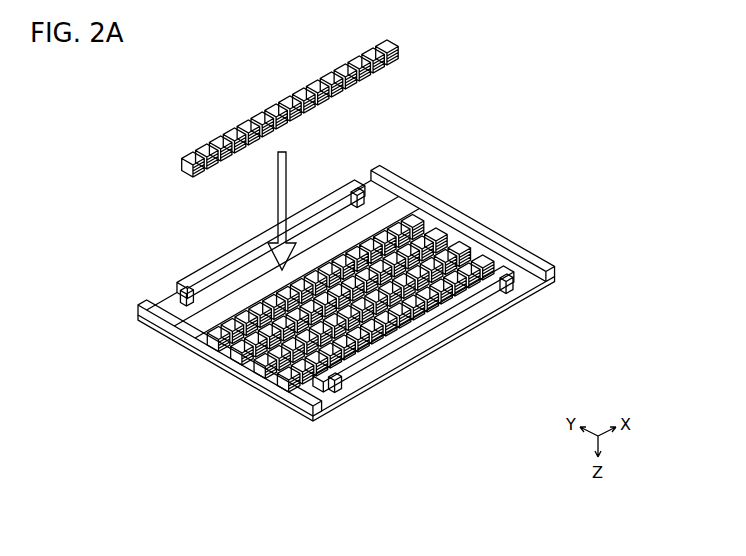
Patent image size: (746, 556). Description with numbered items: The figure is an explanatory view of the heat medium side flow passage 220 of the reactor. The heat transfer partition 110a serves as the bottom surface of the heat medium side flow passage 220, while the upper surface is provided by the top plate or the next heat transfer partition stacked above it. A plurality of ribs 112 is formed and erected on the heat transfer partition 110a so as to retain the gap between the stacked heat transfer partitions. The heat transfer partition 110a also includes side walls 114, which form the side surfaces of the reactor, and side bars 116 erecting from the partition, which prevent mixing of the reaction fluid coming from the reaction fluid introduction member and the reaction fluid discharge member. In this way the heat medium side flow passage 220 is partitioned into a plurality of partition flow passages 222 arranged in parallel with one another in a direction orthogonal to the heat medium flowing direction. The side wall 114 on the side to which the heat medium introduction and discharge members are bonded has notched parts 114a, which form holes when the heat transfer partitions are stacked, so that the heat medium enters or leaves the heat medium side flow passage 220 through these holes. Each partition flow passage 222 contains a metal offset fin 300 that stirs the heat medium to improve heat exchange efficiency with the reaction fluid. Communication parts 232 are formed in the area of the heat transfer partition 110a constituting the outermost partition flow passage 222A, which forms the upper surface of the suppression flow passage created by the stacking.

The heat medium side flow passage 220 is at (383, 247).
The metal offset fin 300 is at (329, 227).
The ribs 112 is at (512, 260).
The side walls 114 is at (330, 195).
The side bars 116 is at (542, 256).
The communication parts 232 is at (358, 200).
The partition flow passages 222 is at (329, 284).
The outermost partition flow passage 222A is at (237, 273).
The heat transfer partition 110a is at (268, 397).
The notched parts 114a is at (538, 283).